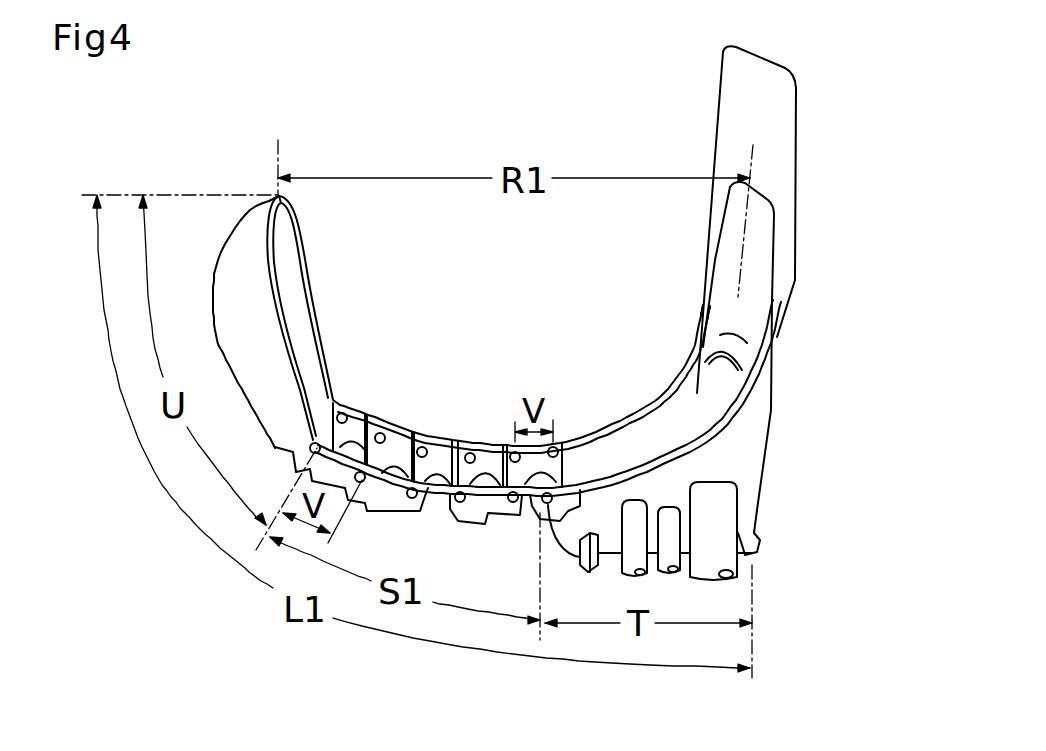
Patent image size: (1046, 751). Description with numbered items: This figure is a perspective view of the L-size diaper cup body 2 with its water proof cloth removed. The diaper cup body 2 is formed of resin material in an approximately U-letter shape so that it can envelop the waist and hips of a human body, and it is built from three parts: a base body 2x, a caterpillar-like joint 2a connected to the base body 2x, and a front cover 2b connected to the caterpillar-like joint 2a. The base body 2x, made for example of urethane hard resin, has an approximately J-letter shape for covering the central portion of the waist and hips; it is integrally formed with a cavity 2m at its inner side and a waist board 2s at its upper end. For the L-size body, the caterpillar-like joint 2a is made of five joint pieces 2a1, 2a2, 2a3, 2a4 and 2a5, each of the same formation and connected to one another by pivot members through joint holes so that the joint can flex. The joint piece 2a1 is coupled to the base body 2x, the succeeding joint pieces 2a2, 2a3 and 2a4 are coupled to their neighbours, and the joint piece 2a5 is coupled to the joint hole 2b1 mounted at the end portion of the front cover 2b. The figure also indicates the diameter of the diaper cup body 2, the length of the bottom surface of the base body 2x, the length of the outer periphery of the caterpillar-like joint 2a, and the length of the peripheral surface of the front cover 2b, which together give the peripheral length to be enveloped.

The diaper cup body 2 is at (805, 276).
The waist board 2s is at (773, 145).
The base body 2x is at (740, 453).
The cavity 2m is at (683, 423).
The front cover 2b is at (287, 248).
The joint hole 2b1 is at (318, 390).
The caterpillar-like joint 2a is at (558, 410).
The joint piece 2a1 is at (552, 492).
The joint piece 2a2 is at (492, 458).
The joint piece 2a3 is at (445, 448).
The joint piece 2a4 is at (378, 483).
The joint piece 2a5 is at (365, 400).